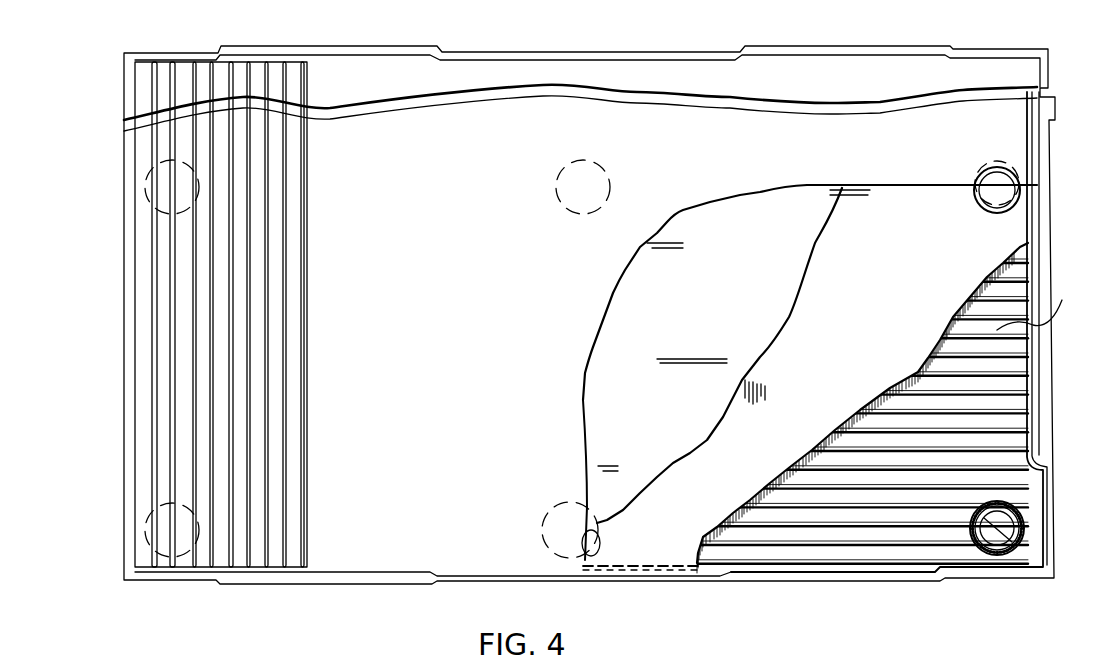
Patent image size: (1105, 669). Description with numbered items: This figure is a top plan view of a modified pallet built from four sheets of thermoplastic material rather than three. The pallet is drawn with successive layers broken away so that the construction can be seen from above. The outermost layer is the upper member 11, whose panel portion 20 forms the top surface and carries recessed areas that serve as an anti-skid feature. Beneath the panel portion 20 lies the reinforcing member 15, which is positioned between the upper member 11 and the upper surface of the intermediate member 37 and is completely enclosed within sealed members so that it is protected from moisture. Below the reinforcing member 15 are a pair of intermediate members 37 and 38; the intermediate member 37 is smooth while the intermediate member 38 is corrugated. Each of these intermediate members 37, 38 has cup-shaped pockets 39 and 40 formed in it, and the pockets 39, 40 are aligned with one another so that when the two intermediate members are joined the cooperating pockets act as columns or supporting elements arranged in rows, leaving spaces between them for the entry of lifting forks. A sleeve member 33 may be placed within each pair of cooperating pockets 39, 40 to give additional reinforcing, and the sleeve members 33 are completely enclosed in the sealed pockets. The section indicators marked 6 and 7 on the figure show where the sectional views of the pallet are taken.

The upper member 11 is at (417, 553).
The panel portion 20 is at (450, 333).
The reinforcing member 15 is at (697, 333).
The intermediate member 37 is at (912, 333).
The intermediate member 38 is at (1045, 299).
The sleeve member 33 is at (1003, 510).
The cup-shaped pocket 39 is at (1016, 530).
The cup-shaped pocket 40 is at (987, 550).
The section line 7- 7 is at (64, 352).
The section line 6- 6 is at (238, 530).